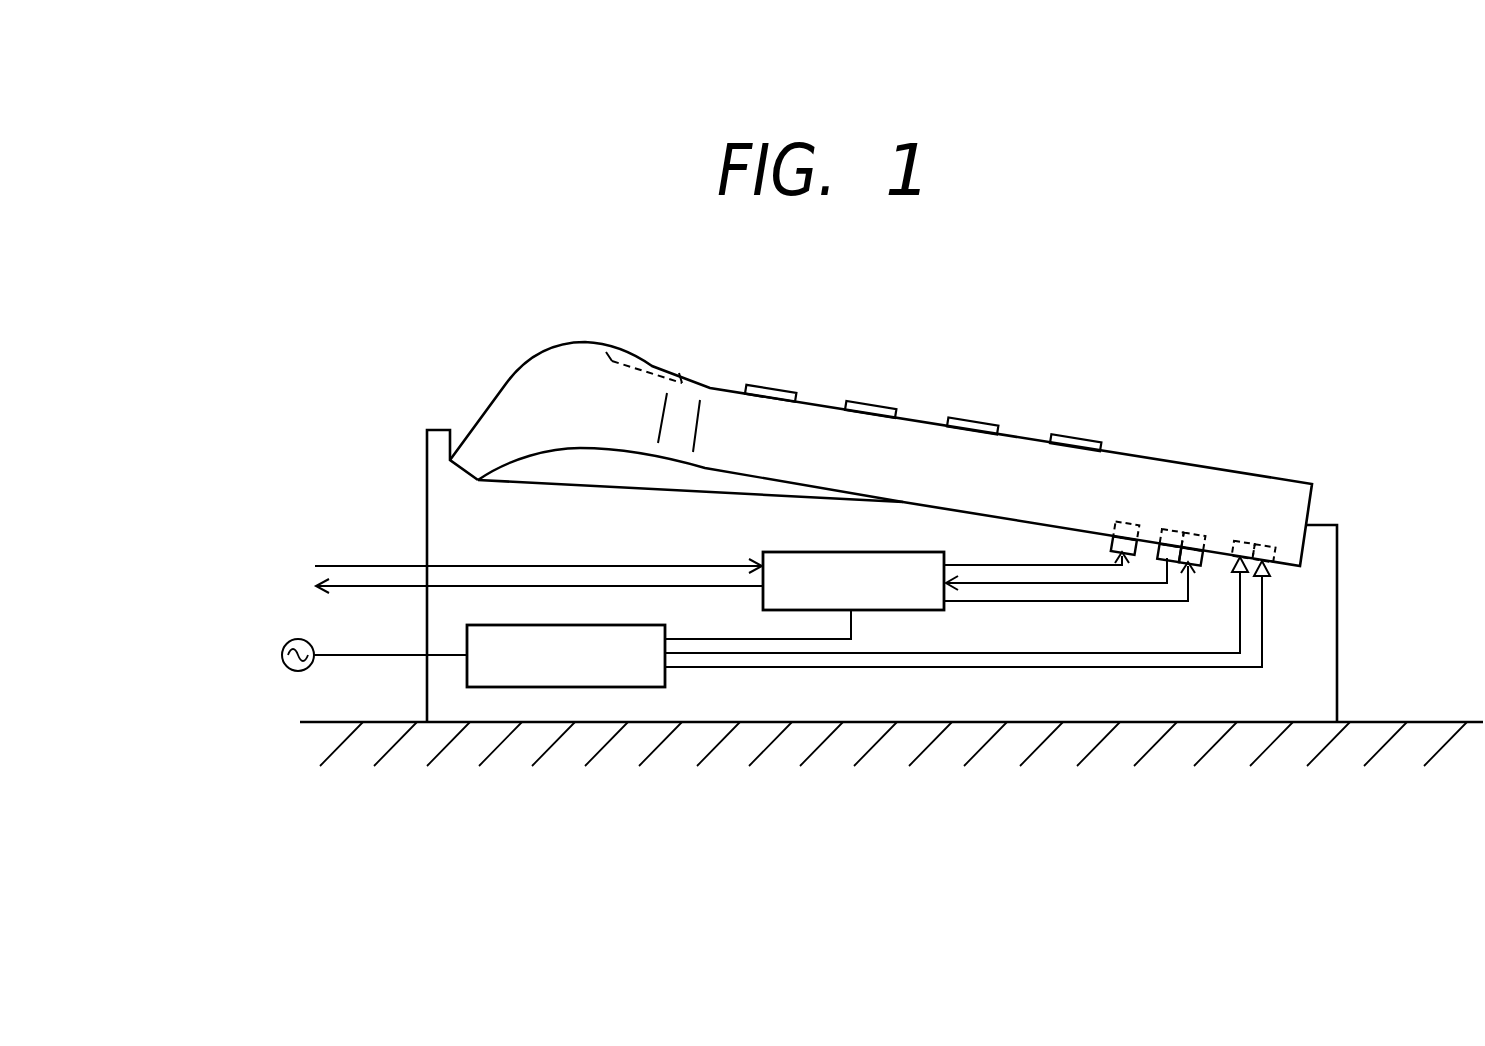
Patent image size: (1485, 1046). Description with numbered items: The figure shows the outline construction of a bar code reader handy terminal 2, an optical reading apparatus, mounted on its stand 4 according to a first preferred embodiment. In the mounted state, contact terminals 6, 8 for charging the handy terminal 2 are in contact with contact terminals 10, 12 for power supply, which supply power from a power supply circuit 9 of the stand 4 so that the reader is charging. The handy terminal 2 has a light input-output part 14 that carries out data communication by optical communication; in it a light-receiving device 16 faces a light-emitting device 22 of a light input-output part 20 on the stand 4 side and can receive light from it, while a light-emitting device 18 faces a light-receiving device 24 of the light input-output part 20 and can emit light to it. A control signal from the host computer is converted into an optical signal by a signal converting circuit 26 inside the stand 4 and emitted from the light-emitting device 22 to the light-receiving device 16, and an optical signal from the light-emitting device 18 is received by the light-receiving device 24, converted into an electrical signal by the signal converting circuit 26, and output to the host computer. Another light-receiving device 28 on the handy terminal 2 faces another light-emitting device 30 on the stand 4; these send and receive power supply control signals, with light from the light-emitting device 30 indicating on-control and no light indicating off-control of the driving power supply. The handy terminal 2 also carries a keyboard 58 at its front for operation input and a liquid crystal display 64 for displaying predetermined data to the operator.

The bar code reader handy terminal 2 is at (917, 421).
The stand 4 is at (1337, 678).
The contact terminal 6 is at (1244, 542).
The contact terminal 8 is at (1263, 545).
The power supply circuit 9 is at (525, 624).
The contact terminal for power supply 10 is at (1236, 567).
The contact terminal for power supply 12 is at (1268, 568).
The light input-output part 14 is at (1108, 463).
The light-receiving device 16 is at (1192, 533).
The light-emitting device 18 is at (1170, 528).
The light input-output part 20 is at (1131, 716).
The light-emitting device 22 is at (1203, 560).
The light-receiving device 24 is at (1160, 550).
The signal converting circuit 26 is at (800, 552).
The light-receiving device 28 is at (1129, 518).
The light-emitting device 30 is at (1113, 544).
The keyboard 58 is at (773, 383).
The liquid crystal display 64 is at (650, 360).